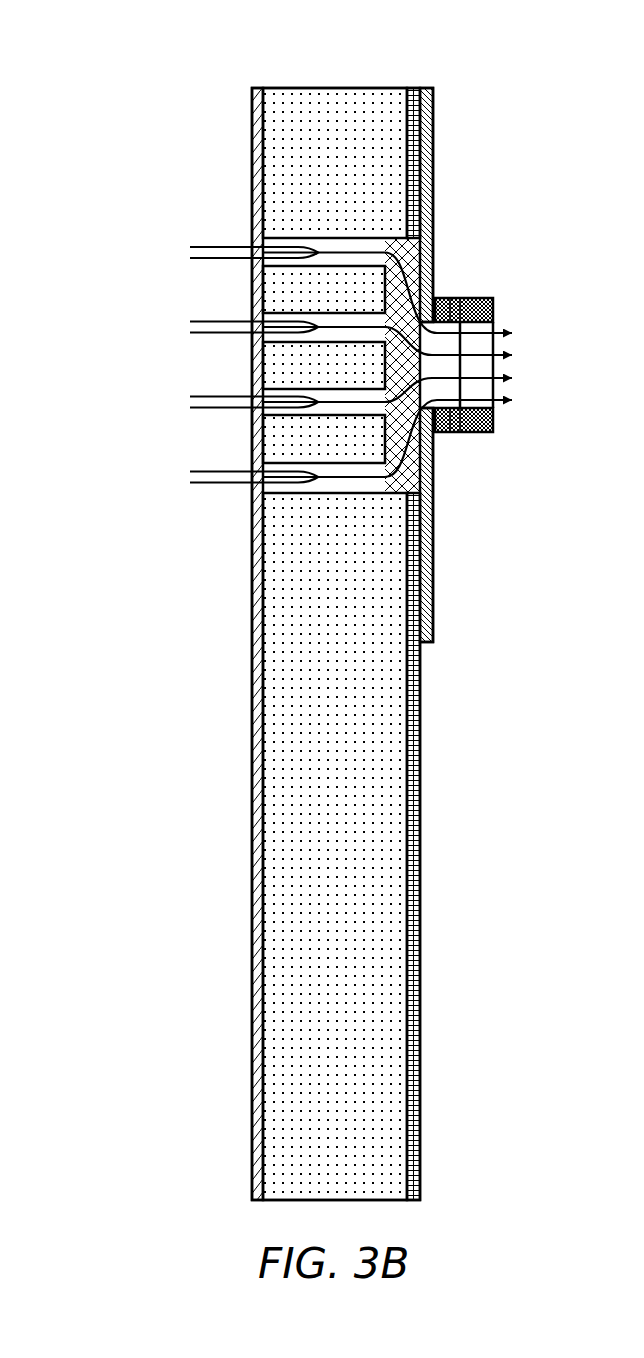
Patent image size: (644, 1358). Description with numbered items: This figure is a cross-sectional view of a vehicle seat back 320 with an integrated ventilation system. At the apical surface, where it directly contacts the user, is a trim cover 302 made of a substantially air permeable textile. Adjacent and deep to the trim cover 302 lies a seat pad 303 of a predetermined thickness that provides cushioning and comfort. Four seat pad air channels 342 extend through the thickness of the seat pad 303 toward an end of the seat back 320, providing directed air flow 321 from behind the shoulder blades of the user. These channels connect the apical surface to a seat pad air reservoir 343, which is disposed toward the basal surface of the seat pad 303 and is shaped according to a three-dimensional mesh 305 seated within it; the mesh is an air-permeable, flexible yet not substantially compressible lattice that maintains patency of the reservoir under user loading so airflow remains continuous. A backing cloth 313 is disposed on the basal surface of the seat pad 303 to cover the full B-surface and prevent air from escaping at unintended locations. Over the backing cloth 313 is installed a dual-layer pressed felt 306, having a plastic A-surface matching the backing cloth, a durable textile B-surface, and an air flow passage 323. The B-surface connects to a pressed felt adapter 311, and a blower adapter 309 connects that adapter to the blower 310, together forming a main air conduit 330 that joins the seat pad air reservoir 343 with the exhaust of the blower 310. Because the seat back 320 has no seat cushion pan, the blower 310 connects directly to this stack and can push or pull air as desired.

The seat back 320 is at (130, 716).
The trim cover 302 is at (249, 122).
The seat pad 303 is at (279, 97).
The backing cloth 313 is at (413, 96).
The dual-layer pressed felt 306 is at (434, 87).
The three-dimensional mesh 305 is at (426, 486).
The seat pad air reservoir 343 is at (414, 245).
The pressed felt adapter 311 is at (449, 296).
The blower adapter 309 is at (458, 436).
The blower 310 is at (497, 309).
The directed air flow 321 is at (183, 471).
The seat pad air channels 342 is at (303, 489).
The air flow passage 323 is at (433, 335).
The main air conduit 330 is at (455, 374).